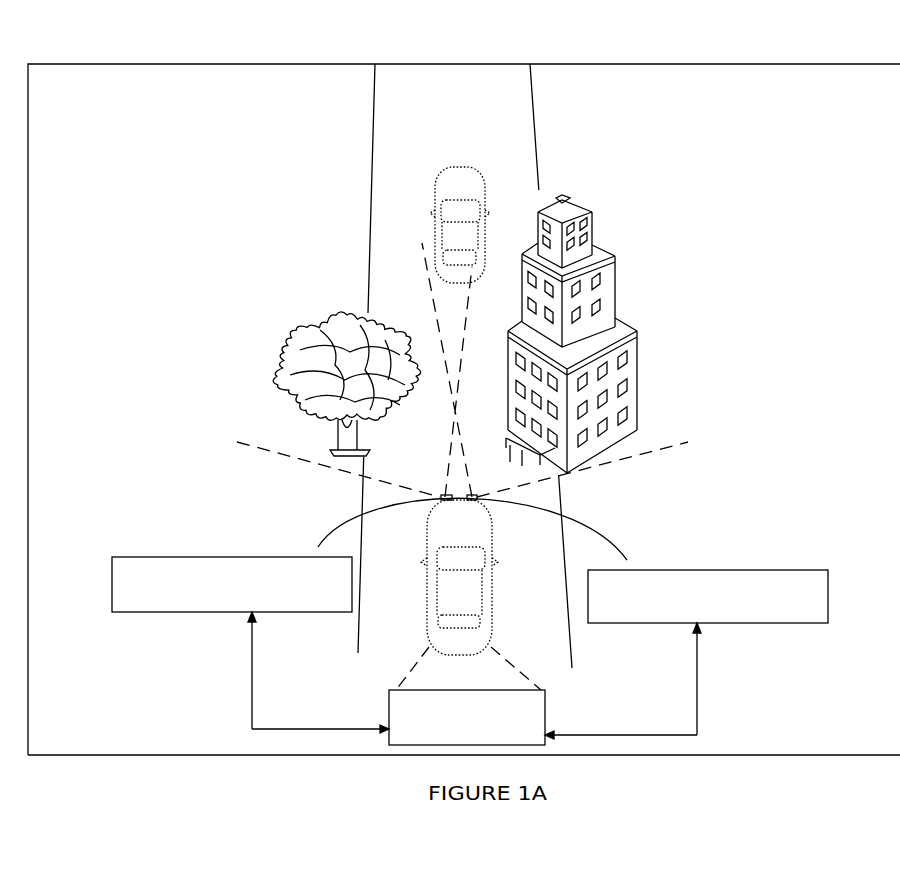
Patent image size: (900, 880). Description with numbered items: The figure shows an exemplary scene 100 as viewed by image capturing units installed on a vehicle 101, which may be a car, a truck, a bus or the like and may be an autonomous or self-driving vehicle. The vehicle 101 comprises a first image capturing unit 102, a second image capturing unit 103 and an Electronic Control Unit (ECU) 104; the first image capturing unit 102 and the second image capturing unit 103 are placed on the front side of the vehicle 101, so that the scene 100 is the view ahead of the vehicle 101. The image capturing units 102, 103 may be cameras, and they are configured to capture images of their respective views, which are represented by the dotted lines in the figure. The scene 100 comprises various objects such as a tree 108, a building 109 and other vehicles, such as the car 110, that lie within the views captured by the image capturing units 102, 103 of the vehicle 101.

The scene 100 is at (768, 60).
The vehicle 101 is at (485, 595).
The first image capturing unit 102 is at (282, 553).
The second image capturing unit 103 is at (647, 559).
The Electronic Control Unit (ECU) 104 is at (467, 717).
The tree 108 is at (340, 322).
The building 109 is at (613, 262).
The car 110 is at (437, 177).